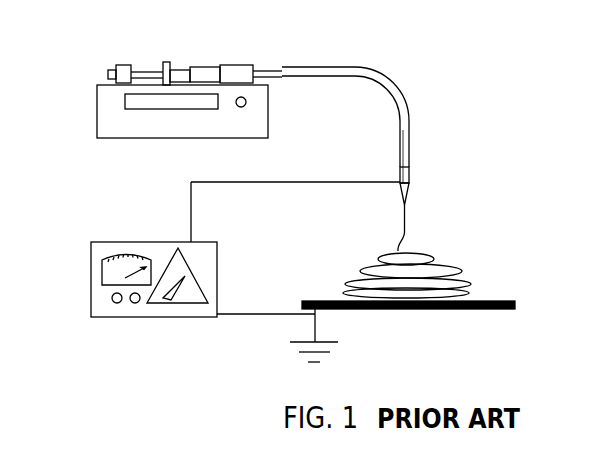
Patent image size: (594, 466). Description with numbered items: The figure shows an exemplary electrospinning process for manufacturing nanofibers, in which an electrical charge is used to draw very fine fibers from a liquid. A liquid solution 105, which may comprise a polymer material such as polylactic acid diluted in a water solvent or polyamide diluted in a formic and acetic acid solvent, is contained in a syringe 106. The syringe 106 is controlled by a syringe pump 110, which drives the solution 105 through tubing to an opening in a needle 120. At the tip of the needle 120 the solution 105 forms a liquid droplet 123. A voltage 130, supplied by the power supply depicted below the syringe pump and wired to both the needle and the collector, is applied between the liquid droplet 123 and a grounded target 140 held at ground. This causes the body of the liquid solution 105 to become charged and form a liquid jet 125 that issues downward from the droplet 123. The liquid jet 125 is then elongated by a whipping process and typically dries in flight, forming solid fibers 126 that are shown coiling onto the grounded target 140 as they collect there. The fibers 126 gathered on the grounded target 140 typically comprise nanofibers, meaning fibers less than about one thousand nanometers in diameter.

The liquid solution 105 is at (244, 72).
The syringe 106 is at (184, 65).
The syringe pump 110 is at (155, 123).
The needle 120 is at (409, 174).
The liquid droplet 123 is at (405, 207).
The liquid jet 125 is at (405, 233).
The solid fibers 126 is at (470, 285).
The voltage 130 is at (282, 183).
The grounded target 140 is at (443, 310).